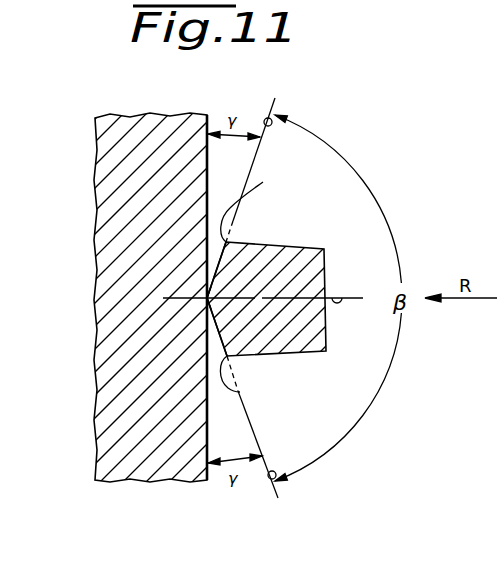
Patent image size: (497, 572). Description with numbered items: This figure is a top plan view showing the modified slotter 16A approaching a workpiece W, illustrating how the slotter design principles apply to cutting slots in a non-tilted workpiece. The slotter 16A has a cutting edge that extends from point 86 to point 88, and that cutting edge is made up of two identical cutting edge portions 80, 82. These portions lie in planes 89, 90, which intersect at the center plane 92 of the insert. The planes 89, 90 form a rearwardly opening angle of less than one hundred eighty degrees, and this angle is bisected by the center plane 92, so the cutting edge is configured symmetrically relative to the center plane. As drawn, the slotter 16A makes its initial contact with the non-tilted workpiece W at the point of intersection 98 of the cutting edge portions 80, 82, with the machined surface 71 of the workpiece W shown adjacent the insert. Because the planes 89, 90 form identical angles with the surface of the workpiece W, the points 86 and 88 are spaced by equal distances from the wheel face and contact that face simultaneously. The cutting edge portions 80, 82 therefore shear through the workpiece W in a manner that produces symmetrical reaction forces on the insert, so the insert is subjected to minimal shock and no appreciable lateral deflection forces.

The workpiece W is at (133, 457).
The machined surface of workpiece 71 is at (208, 119).
The slotter 16A is at (300, 242).
The cutting edge portion 82 is at (217, 272).
The point of intersection 98 is at (212, 303).
The cutting edge portion 80 is at (221, 334).
The plane 90 is at (265, 118).
The plane 89 is at (269, 479).
The point 86 is at (248, 202).
The point 88 is at (240, 392).
The center plane 92 is at (340, 298).